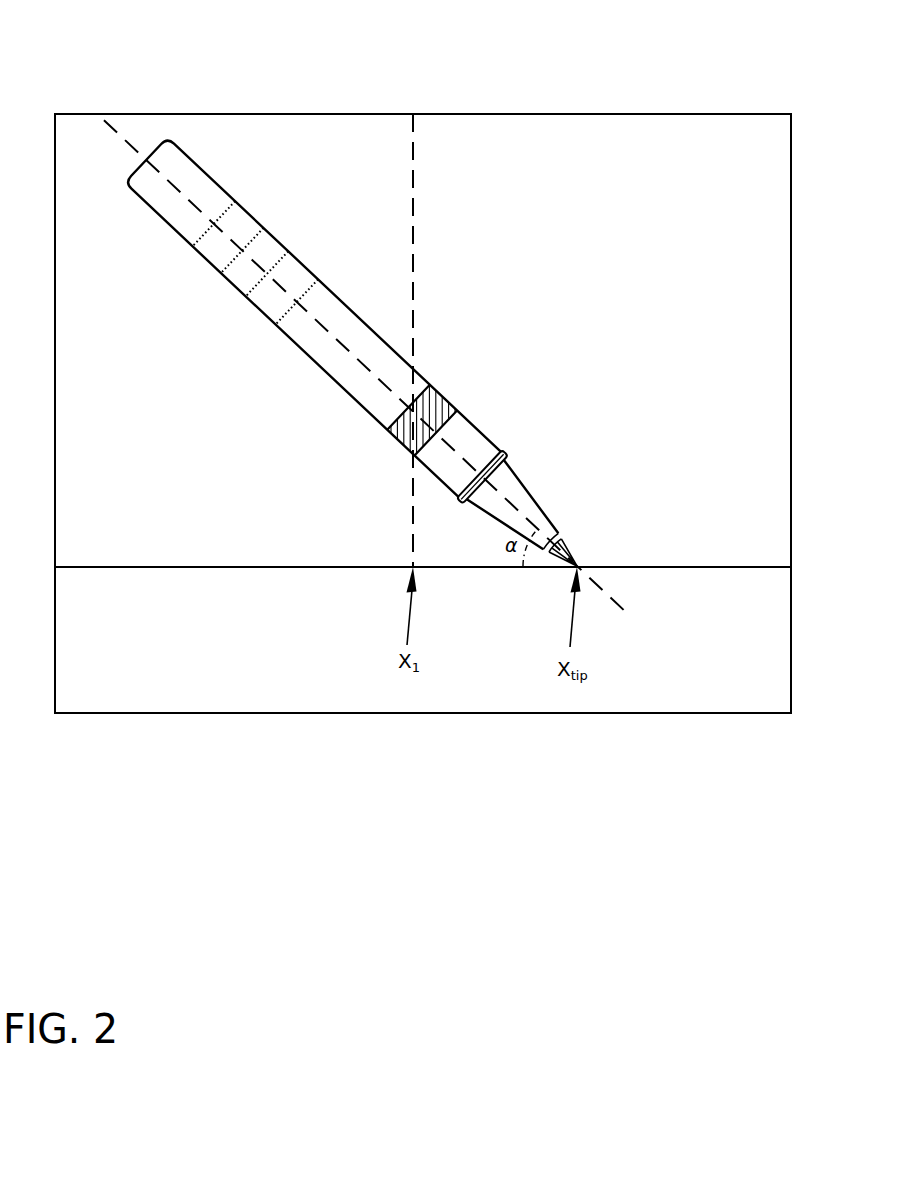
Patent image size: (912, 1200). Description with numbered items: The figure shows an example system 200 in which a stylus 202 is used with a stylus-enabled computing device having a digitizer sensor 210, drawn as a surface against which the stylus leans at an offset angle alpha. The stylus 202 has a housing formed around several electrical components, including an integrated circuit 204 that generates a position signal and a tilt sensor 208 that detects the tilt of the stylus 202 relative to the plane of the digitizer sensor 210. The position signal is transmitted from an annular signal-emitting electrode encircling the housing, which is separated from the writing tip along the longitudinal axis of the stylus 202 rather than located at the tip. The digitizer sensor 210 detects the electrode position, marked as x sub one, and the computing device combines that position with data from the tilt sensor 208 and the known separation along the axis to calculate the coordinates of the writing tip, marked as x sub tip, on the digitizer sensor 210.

The system 200 is at (125, 68).
The stylus 202 is at (387, 368).
The integrated circuit (IC) 204 is at (282, 287).
The tilt sensor 208 is at (228, 237).
The digitizer sensor 210 is at (278, 567).